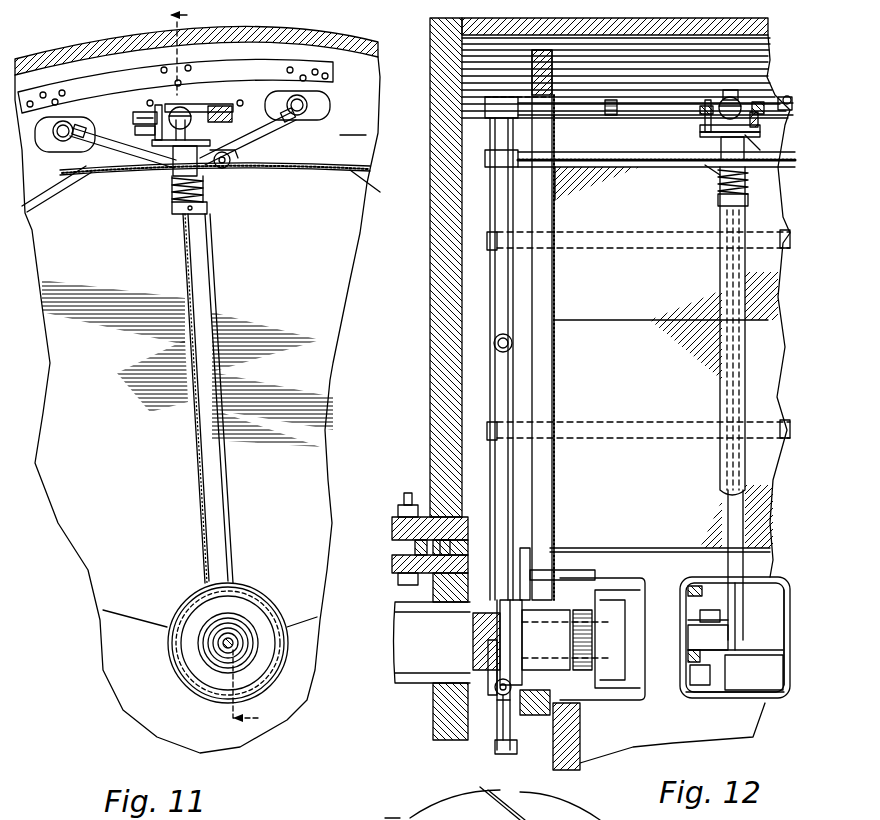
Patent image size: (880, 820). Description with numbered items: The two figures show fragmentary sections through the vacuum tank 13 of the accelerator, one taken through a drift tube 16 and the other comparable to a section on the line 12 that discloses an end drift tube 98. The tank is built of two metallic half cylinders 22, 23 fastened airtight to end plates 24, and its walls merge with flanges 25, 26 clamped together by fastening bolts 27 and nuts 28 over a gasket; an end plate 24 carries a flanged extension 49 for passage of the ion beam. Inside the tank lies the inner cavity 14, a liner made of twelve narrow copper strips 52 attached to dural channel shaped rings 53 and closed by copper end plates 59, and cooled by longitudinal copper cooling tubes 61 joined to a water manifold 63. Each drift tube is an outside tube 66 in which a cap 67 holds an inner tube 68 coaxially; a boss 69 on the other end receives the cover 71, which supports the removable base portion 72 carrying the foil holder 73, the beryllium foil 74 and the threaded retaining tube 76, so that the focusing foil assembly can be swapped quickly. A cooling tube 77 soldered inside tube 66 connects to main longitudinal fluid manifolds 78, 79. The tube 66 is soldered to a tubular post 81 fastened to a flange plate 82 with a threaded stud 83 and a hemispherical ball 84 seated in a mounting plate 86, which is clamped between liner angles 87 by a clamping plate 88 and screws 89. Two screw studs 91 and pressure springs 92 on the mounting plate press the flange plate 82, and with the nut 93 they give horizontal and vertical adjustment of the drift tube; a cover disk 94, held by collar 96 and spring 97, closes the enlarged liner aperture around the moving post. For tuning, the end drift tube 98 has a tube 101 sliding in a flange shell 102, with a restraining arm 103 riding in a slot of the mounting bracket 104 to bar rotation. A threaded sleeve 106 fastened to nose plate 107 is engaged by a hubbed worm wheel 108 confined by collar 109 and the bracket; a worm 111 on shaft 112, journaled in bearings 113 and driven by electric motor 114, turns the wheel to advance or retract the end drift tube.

In FIG. 11, the section line 12 is at (229, 366).
In FIG. 11, the vacuum tank 13 is at (347, 28).
In FIG. 12, the vacuum tank 13 is at (554, 17).
In FIG. 11, the inner cavity 14 is at (326, 167).
In FIG. 12, the inner cavity 14 is at (592, 159).
In FIG. 11, the drift tube 16 is at (214, 701).
In FIG. 12, the drift tube 16 is at (770, 576).
In FIG. 11, the metallic half cylinder 22 is at (74, 46).
In FIG. 12, the metallic half cylinder 22 is at (681, 20).
In FIG. 12, the metallic half cylinder 23 is at (393, 817).
In FIG. 12, the end plate 24 is at (436, 353).
In FIG. 12, the flange 25 is at (391, 528).
In FIG. 12, the flange 26 is at (391, 565).
In FIG. 12, the fastening bolt 27 is at (407, 503).
In FIG. 12, the nut 28 is at (399, 586).
In FIG. 12, the flanged extension 49 is at (397, 683).
In FIG. 11, the copper strip 52 is at (55, 190).
In FIG. 12, the copper strip 52 is at (617, 292).
In FIG. 11, the dural channel shaped ring 53 is at (366, 136).
In FIG. 12, the dural channel shaped ring 53 is at (545, 94).
In FIG. 12, the copper end plate 59 is at (557, 470).
In FIG. 11, the longitudinal copper cooling tube 61 is at (252, 160).
In FIG. 12, the longitudinal copper cooling tube 61 is at (625, 172).
In FIG. 12, the water manifold 63 is at (513, 343).
In FIG. 11, the tube 66 is at (250, 586).
In FIG. 12, the tube 66 is at (711, 699).
In FIG. 12, the cap 67 is at (769, 699).
In FIG. 12, the tube 68 is at (735, 670).
In FIG. 11, the boss 69 is at (275, 606).
In FIG. 12, the boss 69 is at (700, 585).
In FIG. 11, the cover 71 is at (262, 665).
In FIG. 12, the cover 71 is at (687, 592).
In FIG. 11, the removable base portion 72 is at (206, 670).
In FIG. 12, the removable base portion 72 is at (702, 668).
In FIG. 12, the foil holder 73 is at (688, 655).
In FIG. 11, the foil 74 is at (228, 641).
In FIG. 12, the foil 74 is at (688, 632).
In FIG. 11, the threaded retaining tube 76 is at (240, 643).
In FIG. 12, the threaded retaining tube 76 is at (709, 620).
In FIG. 11, the cooling tube 77 is at (190, 606).
In FIG. 12, the cooling tube 77 is at (745, 608).
In FIG. 11, the main longitudinal fluid manifold 78 is at (56, 140).
In FIG. 11, the main longitudinal fluid manifold 79 is at (310, 104).
In FIG. 11, the tubular post 81 is at (202, 470).
In FIG. 12, the tubular post 81 is at (719, 377).
In FIG. 11, the flange plate 82 is at (166, 168).
In FIG. 12, the flange plate 82 is at (710, 135).
In FIG. 11, the threaded stud 83 is at (242, 140).
In FIG. 12, the threaded stud 83 is at (746, 137).
In FIG. 11, the hemispherical ball 84 is at (190, 103).
In FIG. 12, the hemispherical ball 84 is at (699, 128).
In FIG. 11, the mounting plate 86 is at (136, 132).
In FIG. 12, the mounting plate 86 is at (787, 96).
In FIG. 11, the liner angle 87 is at (148, 101).
In FIG. 12, the liner angle 87 is at (611, 99).
In FIG. 11, the clamping plate 88 is at (133, 117).
In FIG. 12, the clamping plate 88 is at (727, 92).
In FIG. 12, the screw 89 is at (704, 108).
In FIG. 11, the screw stud 91 is at (158, 104).
In FIG. 12, the screw stud 91 is at (704, 120).
In FIG. 11, the pressure spring 92 is at (233, 114).
In FIG. 12, the pressure spring 92 is at (759, 120).
In FIG. 11, the nut 93 is at (196, 110).
In FIG. 12, the nut 93 is at (724, 101).
In FIG. 11, the cover disk 94 is at (232, 176).
In FIG. 12, the cover disk 94 is at (706, 167).
In FIG. 11, the collar 96 is at (208, 209).
In FIG. 12, the collar 96 is at (718, 201).
In FIG. 11, the spring 97 is at (174, 196).
In FIG. 12, the spring 97 is at (749, 191).
In FIG. 12, the end drift tube 98 is at (645, 580).
In FIG. 12, the tube 101 is at (615, 701).
In FIG. 12, the flange shell 102 is at (579, 721).
In FIG. 12, the restraining arm 103 is at (615, 538).
In FIG. 12, the mounting bracket 104 is at (515, 752).
In FIG. 12, the threaded sleeve 106 is at (472, 650).
In FIG. 12, the nose plate 107 is at (622, 690).
In FIG. 12, the hubbed worm wheel 108 is at (488, 660).
In FIG. 12, the collar 109 is at (575, 611).
In FIG. 12, the worm 111 is at (497, 702).
In FIG. 12, the shaft 112 is at (505, 692).
In FIG. 12, the bearing 113 is at (521, 691).
In FIG. 12, the electric motor 114 is at (505, 732).